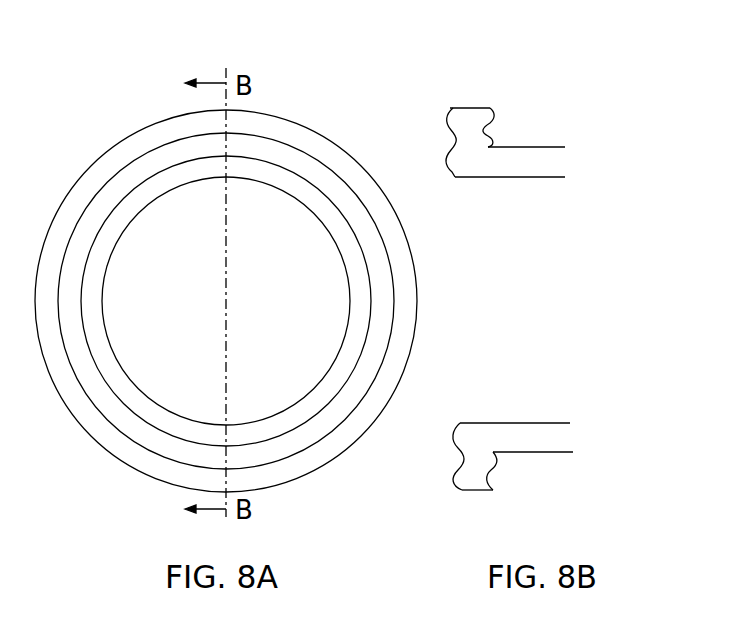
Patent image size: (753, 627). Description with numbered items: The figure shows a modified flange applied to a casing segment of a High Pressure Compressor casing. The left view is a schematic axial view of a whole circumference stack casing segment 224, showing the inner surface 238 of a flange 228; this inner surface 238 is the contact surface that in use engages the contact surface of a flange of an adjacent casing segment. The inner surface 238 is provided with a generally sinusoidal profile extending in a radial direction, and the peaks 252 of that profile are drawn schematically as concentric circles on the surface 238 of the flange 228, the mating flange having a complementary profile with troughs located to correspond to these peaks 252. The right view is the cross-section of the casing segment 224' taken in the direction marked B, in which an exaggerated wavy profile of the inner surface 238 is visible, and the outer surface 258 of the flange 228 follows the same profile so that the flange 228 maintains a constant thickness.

In FIG. 8A, the casing segment 224 is at (222, 246).
In FIG. 8B, the casing segment cross-section 224' is at (576, 263).
In FIG. 8A, the flange 228 is at (80, 175).
In FIG. 8B, the flange 228 is at (475, 118).
In FIG. 8A, the inner surface 238 is at (302, 135).
In FIG. 8B, the inner surface 238 is at (450, 152).
In FIG. 8A, the peaks 252 is at (100, 360).
In FIG. 8B, the outer surface 258 is at (492, 138).